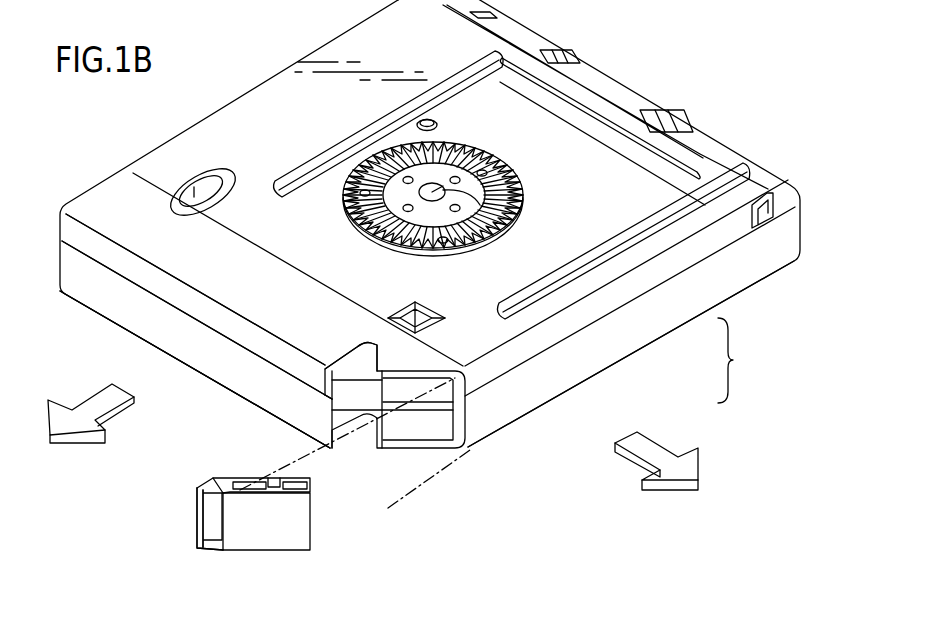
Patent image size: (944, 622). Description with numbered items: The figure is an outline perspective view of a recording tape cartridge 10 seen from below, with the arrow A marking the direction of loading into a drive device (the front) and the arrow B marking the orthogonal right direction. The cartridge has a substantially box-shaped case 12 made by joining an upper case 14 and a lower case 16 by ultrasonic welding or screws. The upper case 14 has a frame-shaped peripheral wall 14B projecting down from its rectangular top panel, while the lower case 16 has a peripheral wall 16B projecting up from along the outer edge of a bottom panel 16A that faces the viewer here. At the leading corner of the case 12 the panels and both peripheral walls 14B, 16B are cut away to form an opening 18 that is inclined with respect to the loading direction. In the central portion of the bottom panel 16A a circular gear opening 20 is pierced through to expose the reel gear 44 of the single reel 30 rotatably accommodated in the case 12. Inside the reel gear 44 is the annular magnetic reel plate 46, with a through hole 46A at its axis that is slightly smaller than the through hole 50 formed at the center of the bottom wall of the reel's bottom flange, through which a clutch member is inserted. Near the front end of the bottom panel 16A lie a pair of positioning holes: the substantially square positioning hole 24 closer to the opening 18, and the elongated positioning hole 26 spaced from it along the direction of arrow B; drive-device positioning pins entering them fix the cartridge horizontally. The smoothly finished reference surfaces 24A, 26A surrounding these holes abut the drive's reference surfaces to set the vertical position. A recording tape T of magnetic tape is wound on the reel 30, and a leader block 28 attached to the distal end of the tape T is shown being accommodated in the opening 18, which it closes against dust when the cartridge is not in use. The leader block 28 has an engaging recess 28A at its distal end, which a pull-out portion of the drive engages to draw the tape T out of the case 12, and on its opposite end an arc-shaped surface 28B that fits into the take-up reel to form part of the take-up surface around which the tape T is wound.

The recording tape cartridge 10 is at (259, 61).
The case 12 is at (740, 360).
The upper case 14 is at (620, 328).
The peripheral wall 14B is at (263, 402).
The lower case 16 is at (622, 288).
The bottom panel 16A is at (233, 290).
The peripheral wall 16B is at (250, 342).
The opening 18 is at (353, 368).
The gear opening 20 is at (520, 183).
The positioning hole 24 is at (425, 314).
The reference surface 24A is at (409, 311).
The positioning hole 26 is at (208, 192).
The reference surface 26A is at (188, 182).
The leader block 28 is at (318, 532).
The engaging recess 28A is at (197, 505).
The arc-shaped surface 28B is at (322, 472).
The reel 30 is at (514, 163).
The reel gear 44 is at (482, 172).
The reel plate 46 is at (443, 177).
The through hole 46A is at (568, 233).
The through hole 50 is at (605, 233).
The arrow A is at (100, 400).
The arrow B is at (648, 450).
The recording tape T is at (380, 480).